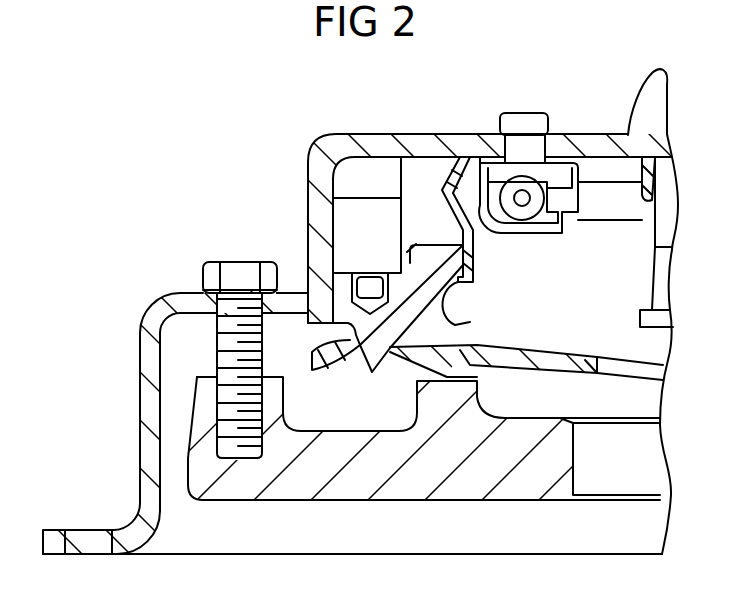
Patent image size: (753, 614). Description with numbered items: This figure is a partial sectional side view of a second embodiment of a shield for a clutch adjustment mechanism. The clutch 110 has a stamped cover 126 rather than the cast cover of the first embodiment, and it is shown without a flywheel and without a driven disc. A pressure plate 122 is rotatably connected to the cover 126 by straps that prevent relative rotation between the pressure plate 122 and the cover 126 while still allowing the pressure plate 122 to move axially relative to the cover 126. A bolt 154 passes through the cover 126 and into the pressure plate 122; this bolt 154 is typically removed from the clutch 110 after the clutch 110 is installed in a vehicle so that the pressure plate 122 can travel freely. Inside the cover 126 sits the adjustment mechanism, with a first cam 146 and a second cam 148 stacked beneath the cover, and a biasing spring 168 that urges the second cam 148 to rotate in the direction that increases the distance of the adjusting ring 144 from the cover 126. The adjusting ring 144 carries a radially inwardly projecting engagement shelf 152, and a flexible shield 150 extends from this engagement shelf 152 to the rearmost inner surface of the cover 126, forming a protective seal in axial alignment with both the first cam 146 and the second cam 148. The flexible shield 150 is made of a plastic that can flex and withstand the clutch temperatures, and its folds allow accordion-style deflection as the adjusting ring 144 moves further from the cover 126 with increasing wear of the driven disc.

The clutch 110 is at (256, 182).
The pressure plate 122 is at (352, 500).
The cover 126 is at (140, 343).
The adjusting ring 144 is at (333, 323).
The first cam 146 is at (407, 220).
The second cam 148 is at (405, 207).
The flexible shield 150 is at (476, 278).
The engagement shelf 152 is at (468, 318).
The bolt 154 is at (203, 274).
The biasing spring 168 is at (540, 192).